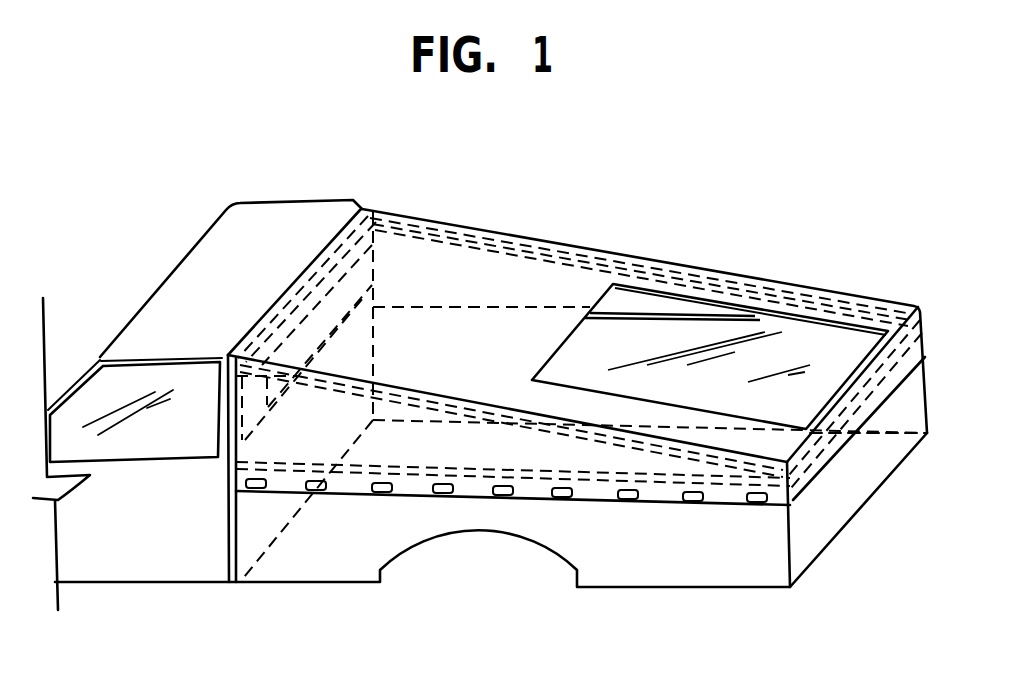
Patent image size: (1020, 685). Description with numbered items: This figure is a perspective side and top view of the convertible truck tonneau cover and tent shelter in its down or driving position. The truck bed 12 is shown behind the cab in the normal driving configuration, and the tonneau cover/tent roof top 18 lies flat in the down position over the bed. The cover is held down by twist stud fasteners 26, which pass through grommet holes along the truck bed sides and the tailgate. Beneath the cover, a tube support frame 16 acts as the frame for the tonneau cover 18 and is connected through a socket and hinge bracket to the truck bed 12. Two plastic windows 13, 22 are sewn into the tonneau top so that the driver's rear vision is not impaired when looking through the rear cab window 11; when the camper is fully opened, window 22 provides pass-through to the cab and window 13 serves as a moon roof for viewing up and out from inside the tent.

The rear cab window 11 is at (258, 418).
The truck bed 12 is at (653, 553).
The plastic window 13 is at (680, 332).
The tube support frame 16 is at (588, 262).
The tonneau cover/tent roof top 18 is at (457, 285).
The plastic window 22 is at (313, 328).
The twist stud fasteners 26 is at (448, 495).